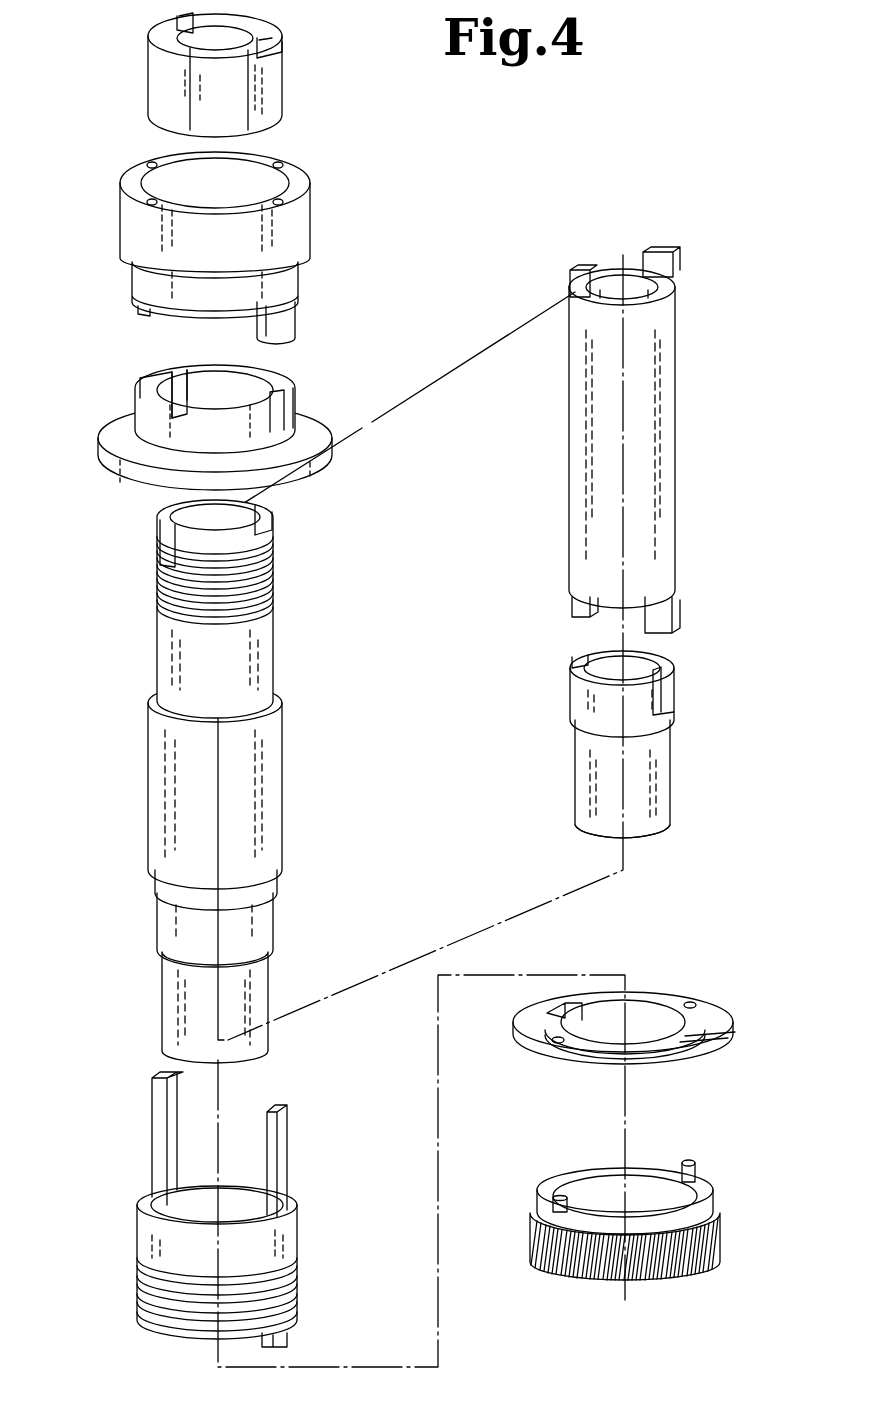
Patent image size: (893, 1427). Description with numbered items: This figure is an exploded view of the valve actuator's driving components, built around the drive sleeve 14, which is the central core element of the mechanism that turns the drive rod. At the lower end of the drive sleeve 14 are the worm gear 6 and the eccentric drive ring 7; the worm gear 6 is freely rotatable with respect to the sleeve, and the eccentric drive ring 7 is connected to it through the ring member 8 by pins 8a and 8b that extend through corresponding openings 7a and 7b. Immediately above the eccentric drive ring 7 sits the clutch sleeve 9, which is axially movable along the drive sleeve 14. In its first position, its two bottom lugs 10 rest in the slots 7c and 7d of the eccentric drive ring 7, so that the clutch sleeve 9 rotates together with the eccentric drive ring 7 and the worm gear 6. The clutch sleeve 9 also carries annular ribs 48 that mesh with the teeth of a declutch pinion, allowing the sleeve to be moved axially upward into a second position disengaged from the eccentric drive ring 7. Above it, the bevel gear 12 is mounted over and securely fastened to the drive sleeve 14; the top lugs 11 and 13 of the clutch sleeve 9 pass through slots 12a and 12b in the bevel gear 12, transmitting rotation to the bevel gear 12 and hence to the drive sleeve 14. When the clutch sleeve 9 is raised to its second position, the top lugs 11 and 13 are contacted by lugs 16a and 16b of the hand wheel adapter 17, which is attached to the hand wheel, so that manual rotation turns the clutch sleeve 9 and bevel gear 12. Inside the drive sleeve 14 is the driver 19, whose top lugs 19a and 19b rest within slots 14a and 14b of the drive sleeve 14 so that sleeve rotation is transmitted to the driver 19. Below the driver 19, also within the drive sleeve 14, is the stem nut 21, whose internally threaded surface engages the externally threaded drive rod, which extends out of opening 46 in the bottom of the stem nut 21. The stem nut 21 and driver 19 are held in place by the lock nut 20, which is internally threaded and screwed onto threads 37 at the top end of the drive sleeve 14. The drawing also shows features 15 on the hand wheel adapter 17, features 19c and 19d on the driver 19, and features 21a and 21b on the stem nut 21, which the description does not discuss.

The lock nut 20 is at (282, 85).
The holes 15 is at (282, 163).
The hand wheel adapter 17 is at (311, 223).
The lug 16a is at (295, 320).
The lug 16b is at (138, 308).
The bevel gear 12 is at (310, 420).
The slot 12a is at (280, 398).
The slot 12b is at (172, 372).
The drive sleeve 14 is at (275, 655).
The slot 14a is at (262, 515).
The slot 14b is at (160, 540).
The threads 37 is at (275, 560).
The top lug 11 is at (152, 1140).
The top lug 13 is at (288, 1150).
The clutch sleeve 9 is at (297, 1232).
The annular ribs 48 is at (297, 1282).
The bottom lugs 10 is at (288, 1336).
The driver 19 is at (676, 480).
The top lug 19a is at (675, 268).
The top lug 19b is at (570, 285).
The projection 19c is at (672, 612).
The projection 19d is at (575, 604).
The stem nut 21 is at (673, 760).
The slot 21a is at (670, 698).
The slot 21b is at (573, 658).
The opening 46 is at (660, 828).
The eccentric drive ring 7 is at (735, 1032).
The opening 7a is at (553, 1040).
The opening 7b is at (694, 1004).
The slot 7c is at (570, 1010).
The slot 7d is at (690, 1050).
The ring member 8 is at (713, 1215).
The pin 8a is at (553, 1200).
The pin 8b is at (698, 1170).
The worm gear 6 is at (720, 1245).